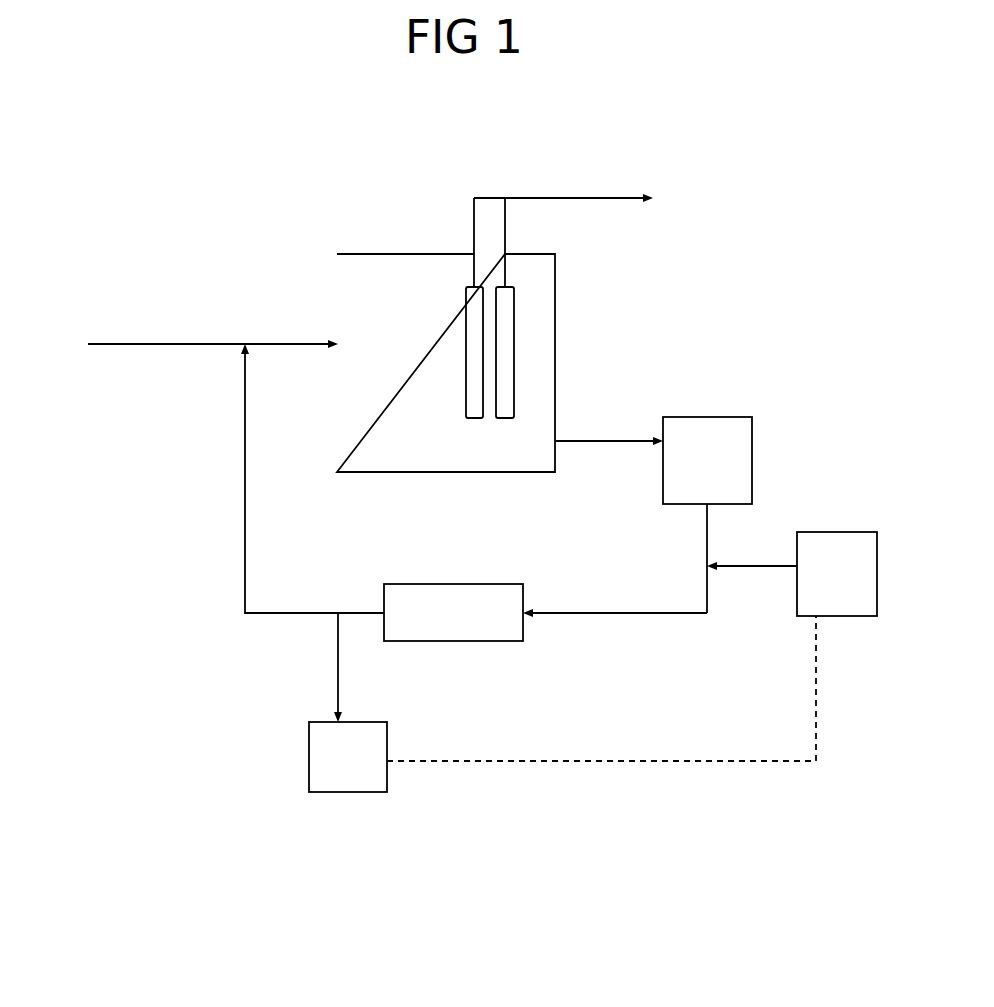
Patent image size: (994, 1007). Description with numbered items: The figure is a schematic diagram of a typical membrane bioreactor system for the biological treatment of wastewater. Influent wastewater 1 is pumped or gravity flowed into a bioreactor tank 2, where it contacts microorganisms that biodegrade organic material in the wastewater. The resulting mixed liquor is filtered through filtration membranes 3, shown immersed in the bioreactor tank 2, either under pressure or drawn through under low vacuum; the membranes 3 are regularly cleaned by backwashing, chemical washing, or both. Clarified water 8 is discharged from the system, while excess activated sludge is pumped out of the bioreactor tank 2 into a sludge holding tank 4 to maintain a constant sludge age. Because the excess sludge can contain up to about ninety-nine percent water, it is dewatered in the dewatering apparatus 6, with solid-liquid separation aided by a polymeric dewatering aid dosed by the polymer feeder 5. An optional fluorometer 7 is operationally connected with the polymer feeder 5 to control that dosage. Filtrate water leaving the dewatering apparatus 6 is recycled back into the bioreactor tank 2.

The influent wastewater 1 is at (196, 343).
The bioreactor tank 2 is at (337, 293).
The filtration membranes 3 is at (504, 340).
The sludge holding tank 4 is at (653, 515).
The polymer feeder 5 is at (792, 574).
The dewatering apparatus 6 is at (474, 492).
The fluorometer 7 is at (562, 702).
The clarified water 8 is at (580, 197).